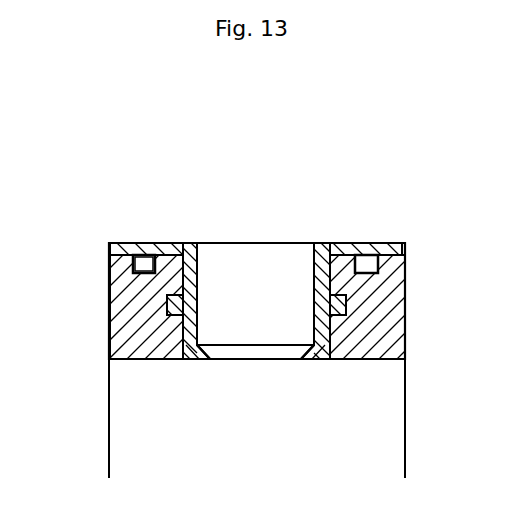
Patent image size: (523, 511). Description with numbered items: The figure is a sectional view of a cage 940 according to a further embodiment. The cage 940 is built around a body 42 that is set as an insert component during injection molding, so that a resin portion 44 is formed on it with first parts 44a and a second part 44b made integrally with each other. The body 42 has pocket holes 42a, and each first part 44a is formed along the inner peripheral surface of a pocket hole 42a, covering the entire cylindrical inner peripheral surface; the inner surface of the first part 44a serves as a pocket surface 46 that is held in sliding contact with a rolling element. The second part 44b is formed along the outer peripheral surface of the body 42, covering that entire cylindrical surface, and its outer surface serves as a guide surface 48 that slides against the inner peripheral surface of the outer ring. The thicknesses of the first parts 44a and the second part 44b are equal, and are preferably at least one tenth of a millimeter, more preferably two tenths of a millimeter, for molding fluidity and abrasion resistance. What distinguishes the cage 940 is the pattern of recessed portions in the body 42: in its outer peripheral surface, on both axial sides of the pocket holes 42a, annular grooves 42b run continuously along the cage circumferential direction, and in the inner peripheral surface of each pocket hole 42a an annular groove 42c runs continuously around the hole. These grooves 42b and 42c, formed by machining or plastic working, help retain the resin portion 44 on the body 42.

The cage 940 is at (386, 236).
The body 42 is at (125, 307).
The pocket hole 42a is at (277, 262).
The annular groove 42b is at (146, 271).
The annular groove 42c is at (178, 303).
The resin portion 44 is at (100, 245).
The first part 44a is at (199, 308).
The second part 44b is at (136, 249).
The pocket surface 46 is at (198, 283).
The guide surface 48 is at (343, 244).